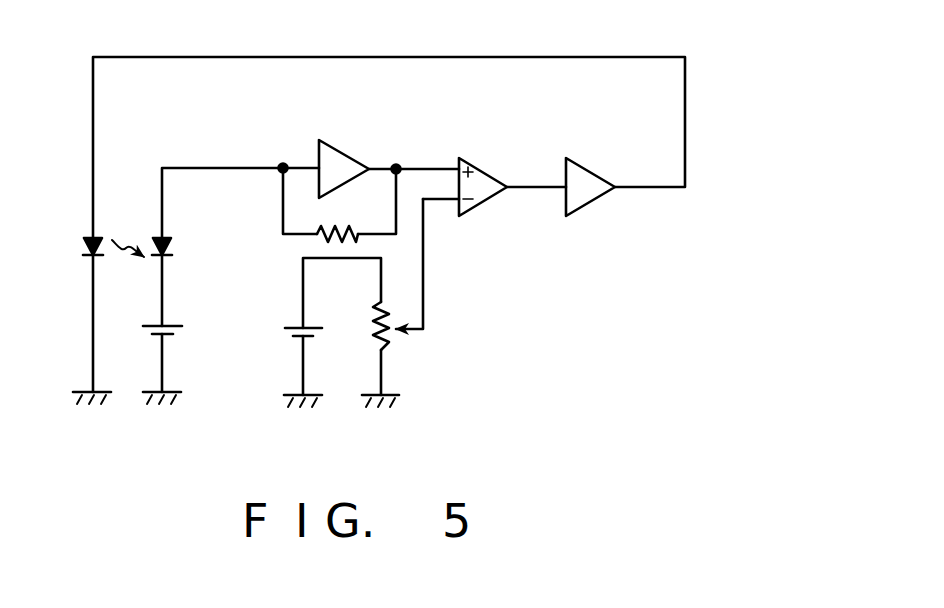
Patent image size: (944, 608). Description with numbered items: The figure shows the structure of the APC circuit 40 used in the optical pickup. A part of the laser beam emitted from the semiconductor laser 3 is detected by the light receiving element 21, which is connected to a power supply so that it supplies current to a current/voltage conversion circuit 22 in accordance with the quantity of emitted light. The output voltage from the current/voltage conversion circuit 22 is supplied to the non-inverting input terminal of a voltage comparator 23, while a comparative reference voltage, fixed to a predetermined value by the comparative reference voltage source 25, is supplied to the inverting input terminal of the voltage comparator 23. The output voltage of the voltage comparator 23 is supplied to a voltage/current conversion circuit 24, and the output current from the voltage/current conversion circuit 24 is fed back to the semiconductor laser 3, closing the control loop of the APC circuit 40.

The semiconductor laser 3 is at (84, 236).
The light receiving element 21 is at (173, 247).
The current/voltage conversion circuit 22 is at (357, 153).
The voltage comparator 23 is at (485, 158).
The voltage/current conversion circuit 24 is at (594, 211).
The comparative reference voltage source 25 is at (417, 346).
The APC circuit 40 is at (724, 57).